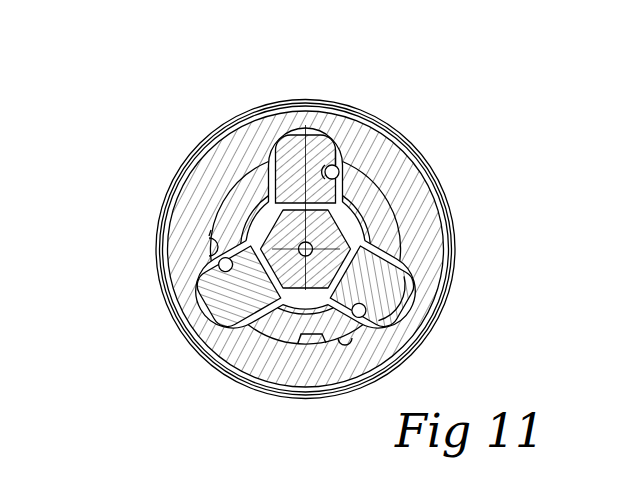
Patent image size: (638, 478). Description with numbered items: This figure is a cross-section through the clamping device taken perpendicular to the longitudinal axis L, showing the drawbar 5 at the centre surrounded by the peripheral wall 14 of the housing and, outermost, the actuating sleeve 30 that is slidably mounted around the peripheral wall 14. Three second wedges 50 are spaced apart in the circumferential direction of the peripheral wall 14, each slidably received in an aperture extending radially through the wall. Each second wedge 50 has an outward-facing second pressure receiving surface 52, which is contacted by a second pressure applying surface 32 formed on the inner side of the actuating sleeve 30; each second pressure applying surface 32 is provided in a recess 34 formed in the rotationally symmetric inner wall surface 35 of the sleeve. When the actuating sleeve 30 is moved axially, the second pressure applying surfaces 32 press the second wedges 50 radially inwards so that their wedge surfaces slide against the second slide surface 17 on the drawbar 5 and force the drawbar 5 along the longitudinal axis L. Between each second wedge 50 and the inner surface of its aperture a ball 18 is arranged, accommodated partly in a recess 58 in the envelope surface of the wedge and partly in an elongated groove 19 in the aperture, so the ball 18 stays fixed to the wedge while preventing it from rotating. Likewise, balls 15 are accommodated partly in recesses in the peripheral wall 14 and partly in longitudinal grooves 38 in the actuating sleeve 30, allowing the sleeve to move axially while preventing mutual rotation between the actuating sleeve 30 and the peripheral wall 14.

The drawbar 5 is at (283, 230).
The peripheral wall 14 is at (237, 203).
The balls 15 is at (207, 249).
The second slide surface 17 is at (388, 260).
The ball 18 is at (338, 172).
The elongated groove 19 is at (338, 165).
The actuating sleeve 30 is at (198, 190).
The second pressure applying surfaces 32 is at (415, 312).
The recess 34 is at (272, 143).
The rotationally symmetric inner wall surface 35 is at (305, 336).
The longitudinal groove 38 is at (205, 239).
The second wedges 50 is at (293, 138).
The second pressure receiving surface 52 is at (412, 302).
The recess 58 is at (328, 166).
The longitudinal axis L is at (310, 246).